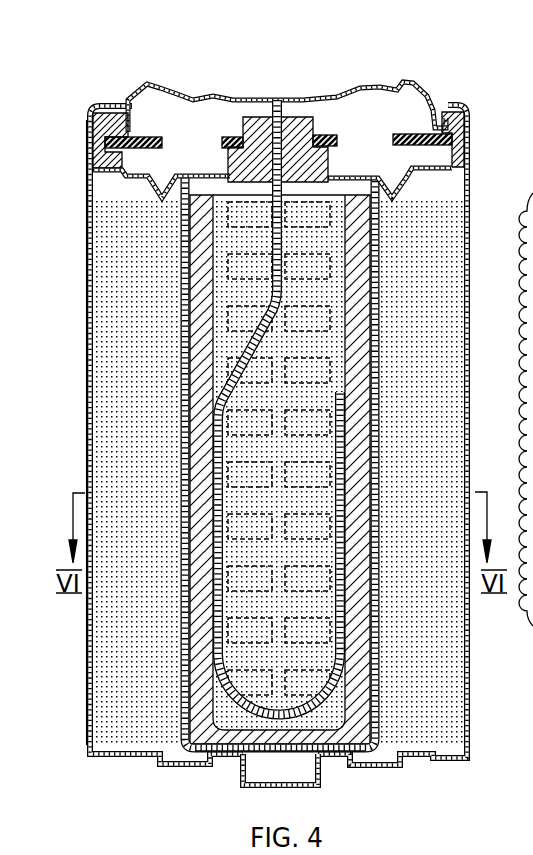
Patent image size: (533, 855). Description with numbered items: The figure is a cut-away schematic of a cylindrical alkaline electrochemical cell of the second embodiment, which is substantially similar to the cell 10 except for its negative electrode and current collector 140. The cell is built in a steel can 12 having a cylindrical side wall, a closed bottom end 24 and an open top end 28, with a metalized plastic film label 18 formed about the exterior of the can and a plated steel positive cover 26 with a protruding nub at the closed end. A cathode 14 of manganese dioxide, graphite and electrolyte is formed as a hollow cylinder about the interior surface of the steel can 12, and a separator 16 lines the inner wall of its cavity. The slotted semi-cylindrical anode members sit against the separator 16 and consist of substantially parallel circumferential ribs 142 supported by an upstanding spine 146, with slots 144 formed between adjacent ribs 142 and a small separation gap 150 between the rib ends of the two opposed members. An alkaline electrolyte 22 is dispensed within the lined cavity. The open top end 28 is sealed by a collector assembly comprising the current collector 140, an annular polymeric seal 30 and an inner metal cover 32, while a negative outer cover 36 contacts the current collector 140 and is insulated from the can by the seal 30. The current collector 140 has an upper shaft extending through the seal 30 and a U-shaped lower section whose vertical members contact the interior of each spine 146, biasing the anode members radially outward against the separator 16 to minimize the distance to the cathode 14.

The electrochemical cell 10 is at (420, 62).
The steel can 12 is at (90, 433).
The cathode 14 is at (117, 407).
The separator 16 is at (178, 352).
The label 18 is at (87, 470).
The alkaline electrolyte 22 is at (212, 233).
The closed bottom end 24 is at (282, 755).
The positive cover 26 is at (303, 787).
The open top end 28 is at (398, 118).
The annular polymeric seal 30 is at (243, 117).
The inner metal cover 32 is at (137, 133).
The negative outer cover 36 is at (176, 85).
The current collector 140 is at (277, 100).
The circumferential ribs 142 is at (395, 315).
The slots 144 is at (400, 336).
The spine 146 is at (380, 278).
The separation gap 150 is at (383, 367).